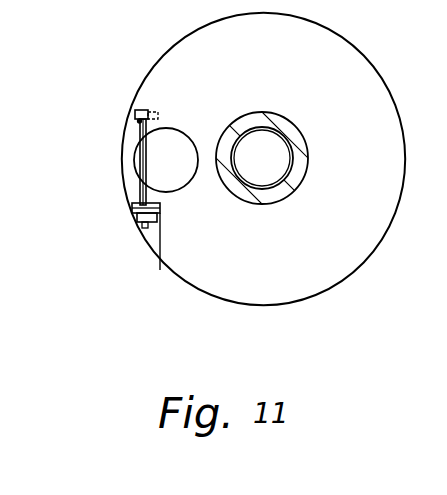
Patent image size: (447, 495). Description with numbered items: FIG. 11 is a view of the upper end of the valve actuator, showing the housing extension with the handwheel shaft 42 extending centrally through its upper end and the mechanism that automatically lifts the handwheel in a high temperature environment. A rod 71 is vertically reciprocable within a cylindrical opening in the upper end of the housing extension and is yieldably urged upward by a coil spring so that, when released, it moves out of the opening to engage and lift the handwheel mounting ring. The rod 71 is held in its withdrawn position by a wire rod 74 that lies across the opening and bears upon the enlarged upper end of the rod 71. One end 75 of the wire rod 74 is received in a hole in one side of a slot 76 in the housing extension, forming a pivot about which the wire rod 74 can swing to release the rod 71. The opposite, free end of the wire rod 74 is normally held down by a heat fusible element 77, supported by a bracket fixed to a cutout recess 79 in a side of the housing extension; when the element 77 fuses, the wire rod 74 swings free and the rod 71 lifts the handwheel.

The shaft 42 is at (298, 128).
The rod 71 is at (173, 147).
The wire rod 74 is at (140, 153).
The end of wire rod 75 is at (160, 108).
The slot 76 is at (136, 115).
The heat fusible element 77 is at (160, 217).
The cutout recess 79 is at (160, 243).